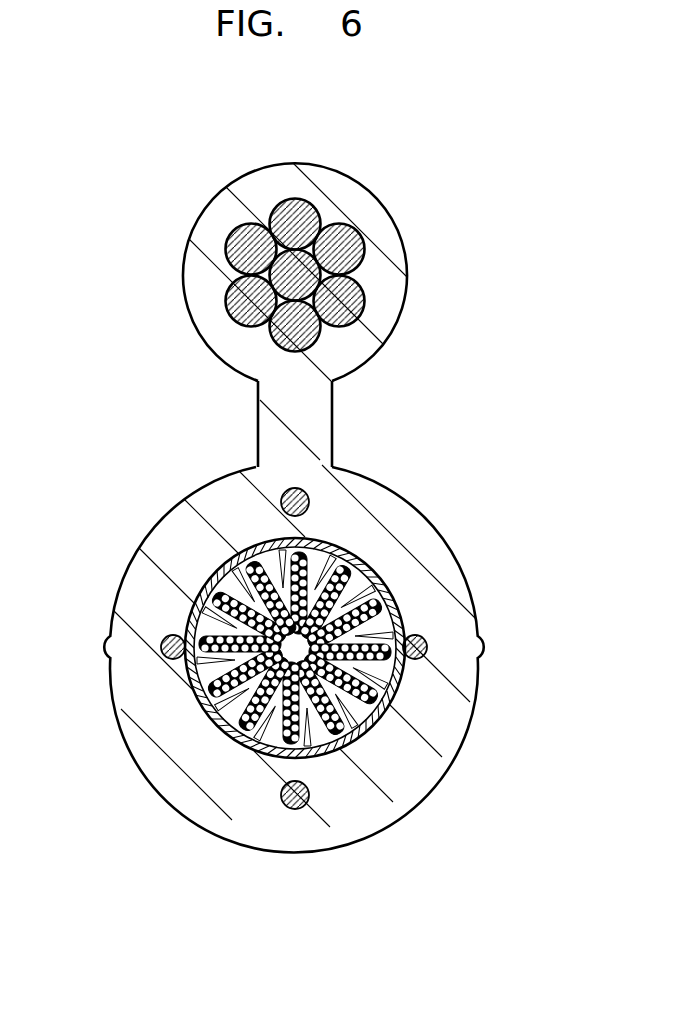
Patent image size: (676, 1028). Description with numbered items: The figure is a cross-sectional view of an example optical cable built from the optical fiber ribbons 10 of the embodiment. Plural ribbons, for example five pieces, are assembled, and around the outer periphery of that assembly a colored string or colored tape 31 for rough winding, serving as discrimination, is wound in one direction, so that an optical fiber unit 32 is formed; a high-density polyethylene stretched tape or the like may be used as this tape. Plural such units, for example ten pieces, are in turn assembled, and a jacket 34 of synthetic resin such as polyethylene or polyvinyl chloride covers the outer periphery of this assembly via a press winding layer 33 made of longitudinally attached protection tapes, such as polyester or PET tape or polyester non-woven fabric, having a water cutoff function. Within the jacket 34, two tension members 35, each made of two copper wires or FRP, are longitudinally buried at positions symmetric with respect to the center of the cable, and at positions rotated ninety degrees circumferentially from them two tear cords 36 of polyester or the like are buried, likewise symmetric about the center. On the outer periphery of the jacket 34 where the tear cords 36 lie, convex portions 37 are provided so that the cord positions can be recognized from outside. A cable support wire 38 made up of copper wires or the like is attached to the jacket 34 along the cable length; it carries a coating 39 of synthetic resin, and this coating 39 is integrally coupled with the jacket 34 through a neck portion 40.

The optical fiber ribbon 10 is at (225, 600).
The colored tape for rough winding 31 is at (233, 551).
The optical fiber unit 32 is at (208, 578).
The press winding layer 33 is at (392, 586).
The jacket 34 is at (372, 794).
The tension member 35 is at (306, 498).
The tear cord 36 is at (422, 642).
The convex portion 37 is at (488, 648).
The cable support wire 38 is at (355, 250).
The coating 39 is at (377, 329).
The neck portion 40 is at (320, 420).